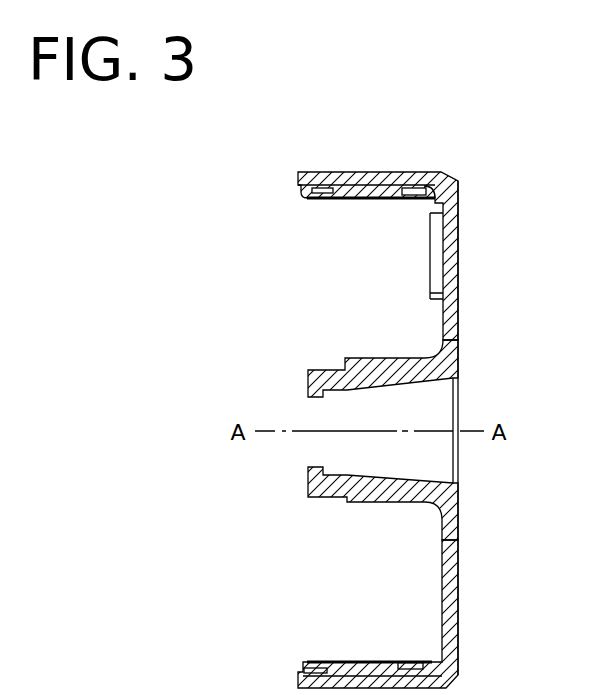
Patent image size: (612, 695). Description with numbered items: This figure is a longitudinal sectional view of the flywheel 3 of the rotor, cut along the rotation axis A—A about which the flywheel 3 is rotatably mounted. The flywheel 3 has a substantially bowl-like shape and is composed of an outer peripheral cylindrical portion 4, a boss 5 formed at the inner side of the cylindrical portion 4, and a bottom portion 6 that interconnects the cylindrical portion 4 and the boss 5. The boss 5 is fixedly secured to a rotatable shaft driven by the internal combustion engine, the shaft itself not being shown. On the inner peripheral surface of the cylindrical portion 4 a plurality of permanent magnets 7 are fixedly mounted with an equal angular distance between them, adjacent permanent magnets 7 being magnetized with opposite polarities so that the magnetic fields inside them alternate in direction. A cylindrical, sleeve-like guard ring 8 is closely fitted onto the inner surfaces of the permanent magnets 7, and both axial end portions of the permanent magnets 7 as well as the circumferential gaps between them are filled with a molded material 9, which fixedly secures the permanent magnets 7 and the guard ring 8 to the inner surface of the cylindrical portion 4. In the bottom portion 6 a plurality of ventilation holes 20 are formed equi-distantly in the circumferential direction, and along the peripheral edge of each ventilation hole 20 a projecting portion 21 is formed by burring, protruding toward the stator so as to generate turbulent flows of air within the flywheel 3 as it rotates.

The flywheel 3 is at (477, 192).
The outer peripheral cylindrical portion 4 is at (350, 171).
The boss 5 is at (395, 487).
The bottom portion 6 is at (458, 330).
The permanent magnets 7 is at (347, 190).
The guard ring 8 is at (378, 190).
The molded material 9 is at (427, 180).
The ventilation holes 20 is at (453, 225).
The projecting portion 21 is at (437, 287).